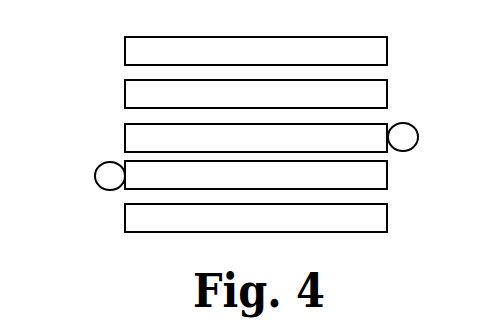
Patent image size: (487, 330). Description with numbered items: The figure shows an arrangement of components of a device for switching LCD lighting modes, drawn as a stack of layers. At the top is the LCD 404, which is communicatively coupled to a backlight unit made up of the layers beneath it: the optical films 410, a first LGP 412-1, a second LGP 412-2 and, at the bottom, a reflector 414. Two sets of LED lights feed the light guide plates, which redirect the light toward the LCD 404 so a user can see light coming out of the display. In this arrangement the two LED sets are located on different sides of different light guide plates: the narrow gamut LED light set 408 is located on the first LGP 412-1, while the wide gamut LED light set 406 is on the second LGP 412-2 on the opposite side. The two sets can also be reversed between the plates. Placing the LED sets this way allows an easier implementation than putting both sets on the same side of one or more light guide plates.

The LCD 404 is at (387, 51).
The optical films 410 is at (125, 93).
The first LGP 412-1 is at (125, 131).
The narrow gamut LED light set 408 is at (419, 138).
The wide gamut LED light set 406 is at (96, 178).
The second LGP 412-2 is at (387, 172).
The reflector 414 is at (387, 213).